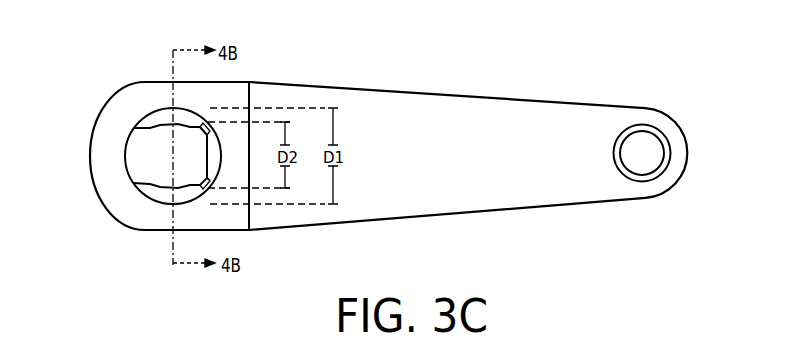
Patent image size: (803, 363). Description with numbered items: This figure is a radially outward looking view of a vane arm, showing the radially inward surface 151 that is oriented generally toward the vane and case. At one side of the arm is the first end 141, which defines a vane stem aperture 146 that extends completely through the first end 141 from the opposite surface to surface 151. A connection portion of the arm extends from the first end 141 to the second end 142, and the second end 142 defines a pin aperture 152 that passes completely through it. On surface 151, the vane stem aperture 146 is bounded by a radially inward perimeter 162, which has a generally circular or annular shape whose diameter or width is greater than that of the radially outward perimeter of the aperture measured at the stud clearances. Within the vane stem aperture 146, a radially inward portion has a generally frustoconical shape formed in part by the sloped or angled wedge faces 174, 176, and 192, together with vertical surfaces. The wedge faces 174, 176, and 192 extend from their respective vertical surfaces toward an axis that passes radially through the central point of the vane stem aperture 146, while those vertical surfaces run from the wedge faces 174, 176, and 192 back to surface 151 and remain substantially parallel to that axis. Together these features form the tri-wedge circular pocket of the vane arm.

The first end 141 is at (110, 102).
The wedge face 176 is at (157, 118).
The vane stem aperture 146 is at (140, 165).
The radially inward perimeter 162 is at (212, 104).
The wedge face 174 is at (158, 193).
The wedge face 192 is at (210, 179).
The surface 151 is at (233, 218).
The second end 142 is at (657, 185).
The pin aperture 152 is at (641, 139).